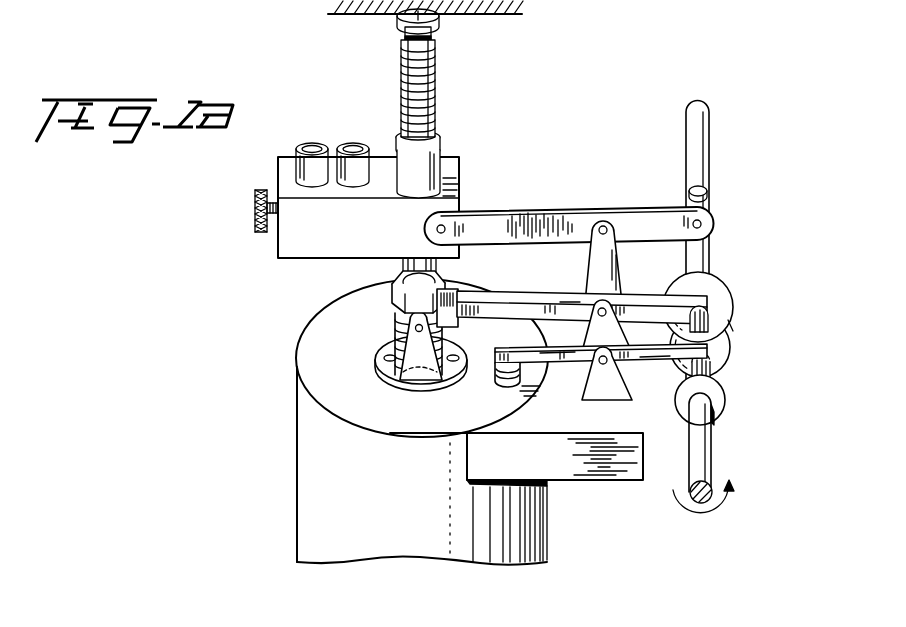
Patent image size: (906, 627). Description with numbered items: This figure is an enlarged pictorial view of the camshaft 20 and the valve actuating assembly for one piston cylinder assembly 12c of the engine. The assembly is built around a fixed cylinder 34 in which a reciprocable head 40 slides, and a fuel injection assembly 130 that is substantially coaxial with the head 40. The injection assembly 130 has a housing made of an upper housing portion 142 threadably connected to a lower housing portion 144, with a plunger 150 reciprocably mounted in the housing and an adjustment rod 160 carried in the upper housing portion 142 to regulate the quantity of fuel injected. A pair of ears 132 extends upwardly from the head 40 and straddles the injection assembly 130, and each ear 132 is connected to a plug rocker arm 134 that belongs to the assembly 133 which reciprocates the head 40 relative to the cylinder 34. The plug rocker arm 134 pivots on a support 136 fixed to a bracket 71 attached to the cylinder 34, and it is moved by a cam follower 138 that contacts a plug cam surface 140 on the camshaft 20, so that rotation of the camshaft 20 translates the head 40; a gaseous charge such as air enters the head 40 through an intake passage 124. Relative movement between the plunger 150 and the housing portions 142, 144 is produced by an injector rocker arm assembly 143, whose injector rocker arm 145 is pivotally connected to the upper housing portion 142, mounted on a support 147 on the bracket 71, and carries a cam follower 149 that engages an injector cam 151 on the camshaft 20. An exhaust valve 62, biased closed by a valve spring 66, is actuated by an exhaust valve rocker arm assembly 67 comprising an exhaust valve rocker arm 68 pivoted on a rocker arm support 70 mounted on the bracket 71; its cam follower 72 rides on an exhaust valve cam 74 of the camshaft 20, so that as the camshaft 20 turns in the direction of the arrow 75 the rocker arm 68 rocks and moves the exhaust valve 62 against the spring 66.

The piston cylinder assembly 12c is at (307, 484).
The camshaft 20 is at (701, 110).
The fixed cylinder 34 is at (296, 366).
The reciprocable head 40 is at (369, 381).
The exhaust valve 62 is at (493, 379).
The valve spring 66 is at (547, 357).
The exhaust valve rocker arm assembly 67 is at (655, 372).
The exhaust valve rocker arm 68 is at (557, 363).
The rocker arm support 70 is at (602, 388).
The bracket 71 is at (580, 477).
The cam follower 72 is at (710, 369).
The exhaust valve cam 74 is at (723, 403).
The arrow 75 is at (690, 517).
The intake passage 124 is at (410, 373).
The fuel injection assembly 130 is at (452, 145).
The ear 132 is at (403, 378).
The assembly 133 is at (551, 296).
The plug rocker arm 134 is at (505, 291).
The support 136 is at (722, 300).
The cam follower 138 is at (733, 329).
The plug cam surface 140 is at (733, 345).
The upper housing portion 142 is at (283, 244).
The injector rocker arm assembly 143 is at (529, 211).
The lower housing portion 144 is at (392, 348).
The injector rocker arm 145 is at (571, 211).
The support 147 is at (609, 265).
The cam follower 149 is at (711, 250).
The plunger 150 is at (401, 88).
The injector cam 151 is at (707, 322).
The adjustment rod 160 is at (254, 214).